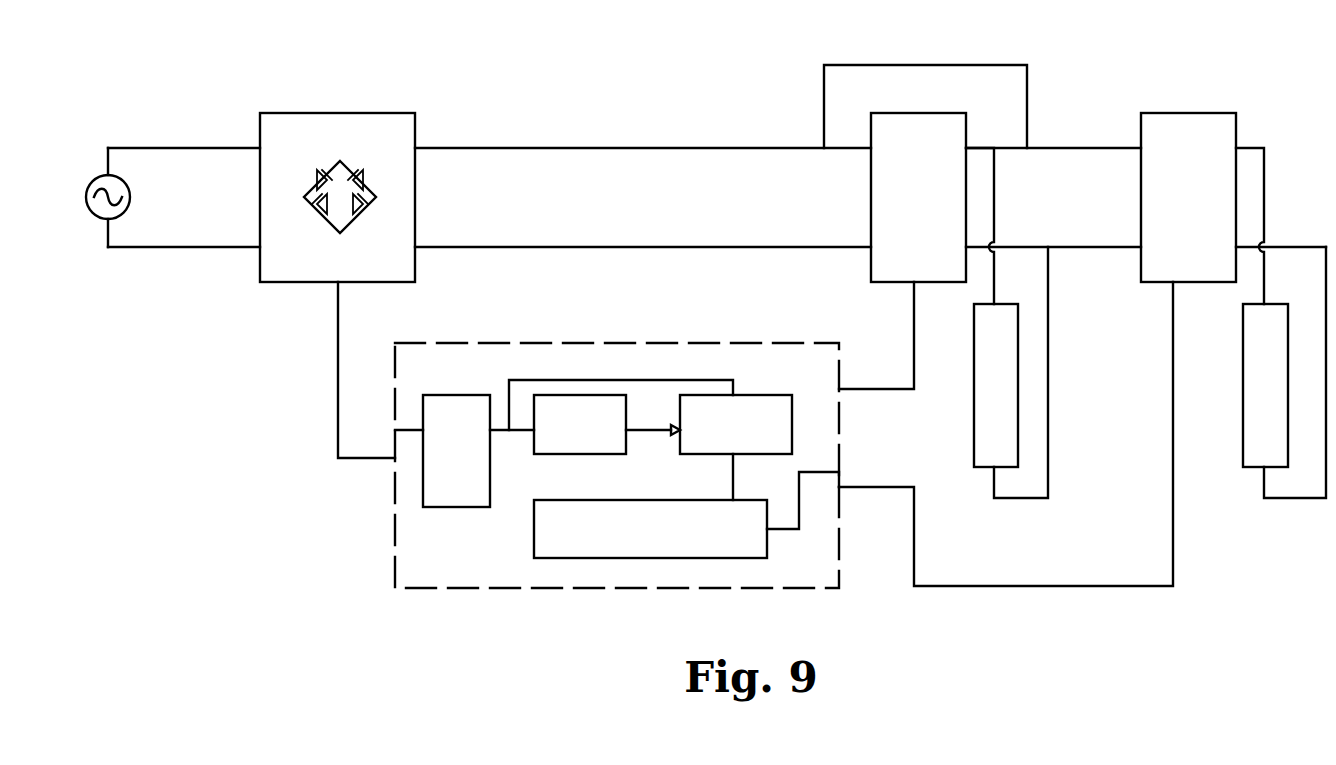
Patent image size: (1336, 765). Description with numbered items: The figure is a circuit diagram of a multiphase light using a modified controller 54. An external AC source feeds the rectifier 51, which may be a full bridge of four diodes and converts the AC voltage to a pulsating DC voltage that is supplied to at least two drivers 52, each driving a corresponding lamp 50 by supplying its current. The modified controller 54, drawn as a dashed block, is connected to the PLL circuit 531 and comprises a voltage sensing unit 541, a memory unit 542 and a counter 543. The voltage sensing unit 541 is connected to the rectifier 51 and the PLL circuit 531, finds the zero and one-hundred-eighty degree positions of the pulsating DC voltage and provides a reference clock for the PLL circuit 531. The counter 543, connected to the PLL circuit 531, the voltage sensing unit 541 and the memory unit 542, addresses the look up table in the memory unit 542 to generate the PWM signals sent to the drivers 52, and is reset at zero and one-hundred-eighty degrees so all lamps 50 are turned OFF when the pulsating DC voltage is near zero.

The lamp 50 is at (992, 441).
The rectifier 51 is at (352, 117).
The driver 52 is at (958, 138).
The modified controller 54 is at (617, 466).
The PLL circuit 531 is at (580, 405).
The voltage sensing unit 541 is at (449, 497).
The memory unit 542 is at (610, 537).
The counter 543 is at (762, 407).